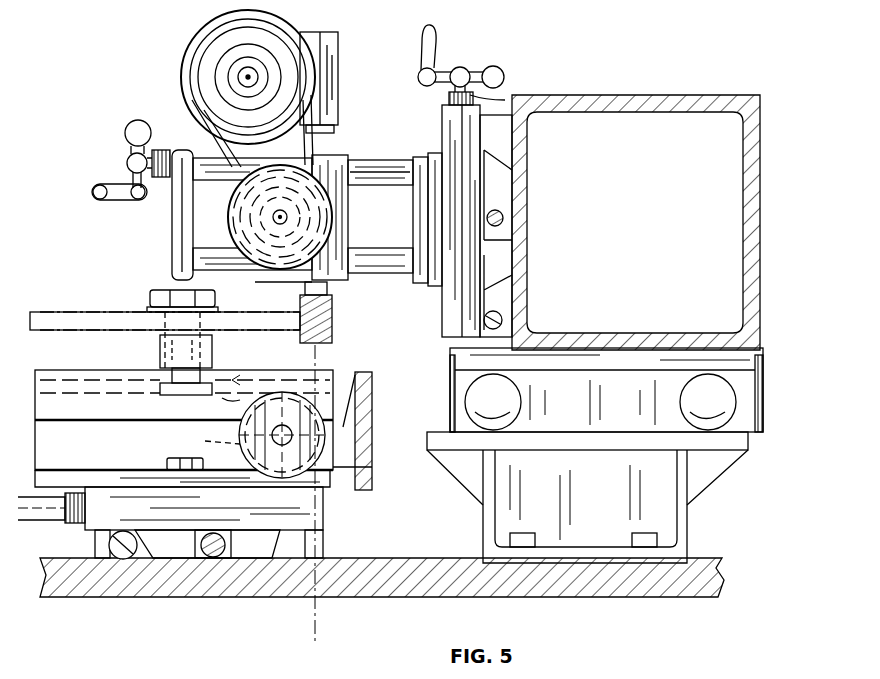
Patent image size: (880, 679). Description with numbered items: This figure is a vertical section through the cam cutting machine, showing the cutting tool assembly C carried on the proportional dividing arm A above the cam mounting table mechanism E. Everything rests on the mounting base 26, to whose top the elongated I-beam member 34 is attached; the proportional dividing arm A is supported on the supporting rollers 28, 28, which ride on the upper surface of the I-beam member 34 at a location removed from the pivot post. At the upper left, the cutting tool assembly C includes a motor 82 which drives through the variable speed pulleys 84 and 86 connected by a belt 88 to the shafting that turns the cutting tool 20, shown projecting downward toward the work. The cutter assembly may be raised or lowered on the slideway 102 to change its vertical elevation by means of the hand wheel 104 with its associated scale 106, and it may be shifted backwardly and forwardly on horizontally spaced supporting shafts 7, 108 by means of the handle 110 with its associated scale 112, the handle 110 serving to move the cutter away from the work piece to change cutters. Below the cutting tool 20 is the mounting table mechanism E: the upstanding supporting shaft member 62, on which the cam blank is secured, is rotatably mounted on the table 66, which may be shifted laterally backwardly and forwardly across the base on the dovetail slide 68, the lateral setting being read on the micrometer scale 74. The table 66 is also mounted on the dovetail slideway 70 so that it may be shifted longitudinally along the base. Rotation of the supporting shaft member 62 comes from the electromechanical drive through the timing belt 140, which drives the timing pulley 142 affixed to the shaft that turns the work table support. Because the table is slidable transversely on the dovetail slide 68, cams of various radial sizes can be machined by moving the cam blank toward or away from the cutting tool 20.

The spindle 7 is at (372, 196).
The cutting tool 20 is at (333, 320).
The mounting base 26 is at (405, 577).
The supporting rollers 28 is at (730, 425).
The I-beam member 34 is at (680, 498).
The supporting shaft member 62 is at (160, 349).
The table 66 is at (45, 406).
The dovetail slide 68 is at (110, 505).
The dovetail slideway 70 is at (168, 548).
The micrometer scale 74 is at (68, 492).
The motor 82 is at (330, 36).
The variable speed pulley 84 is at (202, 36).
The variable speed pulley 86 is at (213, 150).
The belt 88 is at (234, 220).
The slideway 102 is at (447, 318).
The hand wheel 104 is at (448, 72).
The scale 106 is at (506, 99).
The spindle housing 108 is at (371, 262).
The handle 110 is at (115, 160).
The scale 112 is at (162, 150).
The timing belt 140 is at (224, 402).
The timing pulley 142 is at (238, 437).
The proportional dividing arm A is at (663, 94).
The cutting tool assembly C is at (172, 60).
The mounting table mechanism E is at (86, 304).